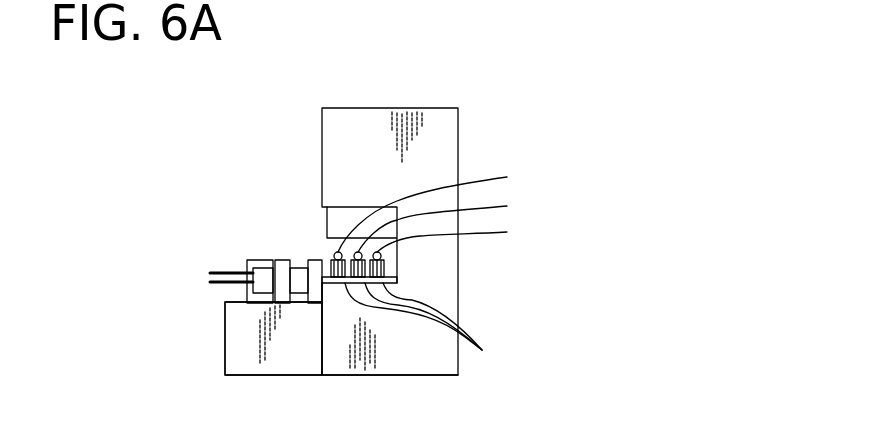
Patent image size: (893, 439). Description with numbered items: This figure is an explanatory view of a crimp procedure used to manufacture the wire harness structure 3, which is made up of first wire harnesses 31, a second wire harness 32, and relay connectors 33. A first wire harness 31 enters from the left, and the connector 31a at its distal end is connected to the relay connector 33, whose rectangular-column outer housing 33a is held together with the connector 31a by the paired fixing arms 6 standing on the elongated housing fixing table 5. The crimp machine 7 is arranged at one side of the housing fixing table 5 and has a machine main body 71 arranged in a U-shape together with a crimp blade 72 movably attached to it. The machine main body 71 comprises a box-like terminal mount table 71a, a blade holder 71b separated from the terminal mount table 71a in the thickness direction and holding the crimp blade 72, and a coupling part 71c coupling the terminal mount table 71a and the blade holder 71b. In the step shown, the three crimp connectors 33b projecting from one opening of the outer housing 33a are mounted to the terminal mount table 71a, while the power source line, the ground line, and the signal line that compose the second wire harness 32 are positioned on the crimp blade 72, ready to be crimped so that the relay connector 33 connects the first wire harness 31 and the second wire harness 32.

The wire harness structure 3 is at (627, 410).
The housing fixing table 5 is at (233, 343).
The fixing arms 6 is at (247, 262).
The crimp machine 7 is at (459, 108).
The first wire harness 31 is at (202, 265).
The connector 31a is at (265, 270).
The second wire harness 32 is at (537, 250).
The relay connector 33 is at (300, 296).
The outer housing 33a is at (298, 277).
The crimp connectors 33b is at (429, 333).
The machine main body 71 is at (733, 410).
The terminal mount table 71a is at (403, 345).
The blade holder 71b is at (358, 142).
The coupling part 71c is at (713, 366).
The crimp blade 72 is at (343, 213).